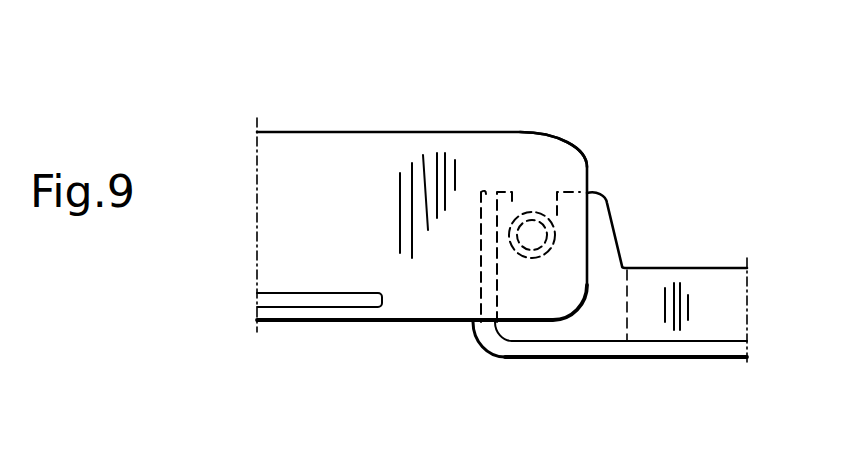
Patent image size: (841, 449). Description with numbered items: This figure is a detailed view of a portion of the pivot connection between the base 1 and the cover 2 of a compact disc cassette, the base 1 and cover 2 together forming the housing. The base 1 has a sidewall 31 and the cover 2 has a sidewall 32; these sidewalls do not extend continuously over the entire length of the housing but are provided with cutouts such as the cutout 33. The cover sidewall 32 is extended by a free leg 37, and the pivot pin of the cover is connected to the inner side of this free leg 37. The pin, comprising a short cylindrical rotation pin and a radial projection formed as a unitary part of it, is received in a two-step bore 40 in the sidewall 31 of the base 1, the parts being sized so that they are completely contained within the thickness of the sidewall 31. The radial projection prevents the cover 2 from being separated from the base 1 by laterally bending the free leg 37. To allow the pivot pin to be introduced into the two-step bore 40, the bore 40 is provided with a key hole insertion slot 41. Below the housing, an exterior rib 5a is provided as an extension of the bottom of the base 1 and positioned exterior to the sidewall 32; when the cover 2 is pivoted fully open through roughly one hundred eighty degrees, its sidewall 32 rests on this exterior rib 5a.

The base 1 is at (705, 268).
The cover 2 is at (357, 327).
The exterior rib 5a is at (510, 343).
The sidewall 31 is at (598, 320).
The sidewall 32 is at (343, 172).
The cutout 33 is at (319, 371).
The free leg 37 is at (530, 160).
The two-step bore 40 is at (560, 232).
The key hole insertion slot 41 is at (537, 208).